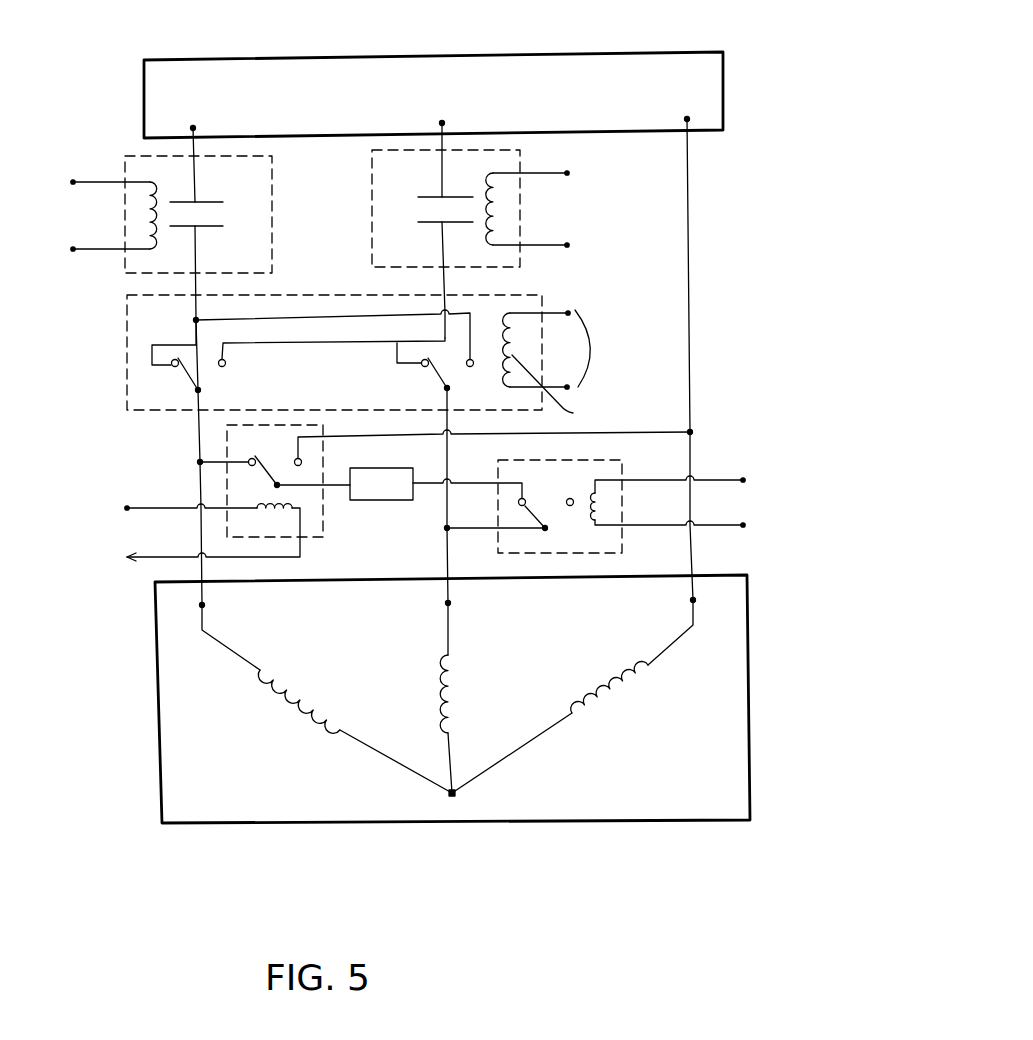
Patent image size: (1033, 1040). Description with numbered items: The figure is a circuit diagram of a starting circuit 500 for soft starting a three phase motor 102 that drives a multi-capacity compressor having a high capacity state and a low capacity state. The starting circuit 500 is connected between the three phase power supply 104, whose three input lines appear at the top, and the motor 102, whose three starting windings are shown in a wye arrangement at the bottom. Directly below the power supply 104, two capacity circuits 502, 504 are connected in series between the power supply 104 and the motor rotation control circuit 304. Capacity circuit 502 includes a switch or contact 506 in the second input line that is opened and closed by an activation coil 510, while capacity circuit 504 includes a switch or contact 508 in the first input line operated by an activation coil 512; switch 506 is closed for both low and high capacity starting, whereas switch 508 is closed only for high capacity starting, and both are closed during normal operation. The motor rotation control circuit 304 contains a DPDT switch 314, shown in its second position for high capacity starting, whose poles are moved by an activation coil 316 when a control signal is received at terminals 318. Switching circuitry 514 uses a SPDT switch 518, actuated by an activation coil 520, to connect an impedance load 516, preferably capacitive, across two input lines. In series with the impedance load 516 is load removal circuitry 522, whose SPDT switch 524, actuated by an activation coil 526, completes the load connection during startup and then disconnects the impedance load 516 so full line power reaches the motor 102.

The three phase power supply 104 is at (627, 52).
The motor 102 is at (673, 823).
The starting circuit 500 is at (776, 437).
The capacity circuit 502 is at (517, 152).
The capacity circuit 504 is at (272, 190).
The switch or contact 506 is at (438, 225).
The switch or contact 508 is at (209, 200).
The activation coil 510 is at (496, 208).
The activation coil 512 is at (145, 212).
The switching circuitry 514 is at (323, 537).
The impedance load 516 is at (367, 468).
The SPDT switch 518 is at (277, 462).
The activation coil 520 is at (280, 513).
The load removal circuitry 522 is at (593, 457).
The SPDT switch 524 is at (547, 520).
The activation coil 526 is at (600, 502).
The motor rotation control circuit 304 is at (170, 431).
The double pole double throw (DPDT) switch 314 is at (433, 373).
The activation coil 316 is at (564, 391).
The terminals 318 is at (561, 349).